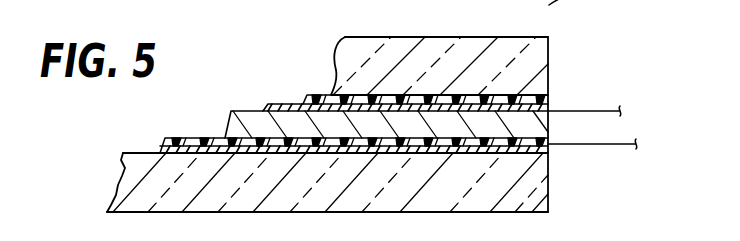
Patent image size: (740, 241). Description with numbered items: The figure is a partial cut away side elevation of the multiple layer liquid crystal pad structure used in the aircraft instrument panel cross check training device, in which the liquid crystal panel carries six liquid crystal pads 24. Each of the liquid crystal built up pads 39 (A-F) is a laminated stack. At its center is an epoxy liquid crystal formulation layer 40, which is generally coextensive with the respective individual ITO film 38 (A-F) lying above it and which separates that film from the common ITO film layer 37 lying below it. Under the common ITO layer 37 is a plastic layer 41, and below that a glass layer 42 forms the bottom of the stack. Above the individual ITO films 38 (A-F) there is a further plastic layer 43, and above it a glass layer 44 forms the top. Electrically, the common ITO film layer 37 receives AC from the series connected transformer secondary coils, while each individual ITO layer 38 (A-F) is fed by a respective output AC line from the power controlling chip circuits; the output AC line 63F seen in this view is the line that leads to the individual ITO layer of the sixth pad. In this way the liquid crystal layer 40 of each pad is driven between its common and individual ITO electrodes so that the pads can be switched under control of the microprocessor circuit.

The liquid crystal pad 24 is at (549, 86).
The common ITO film layer 37 is at (200, 139).
The individual ITO film layers 38 is at (271, 108).
The liquid crystal built up pads 39 is at (365, 34).
The epoxy liquid crystal formulation layer 40 is at (226, 116).
The plastic layer 41 is at (164, 143).
The glass layer 42 is at (122, 179).
The plastic layer 43 is at (322, 94).
The glass layer 44 is at (549, 60).
The output AC line 63F is at (276, 0).